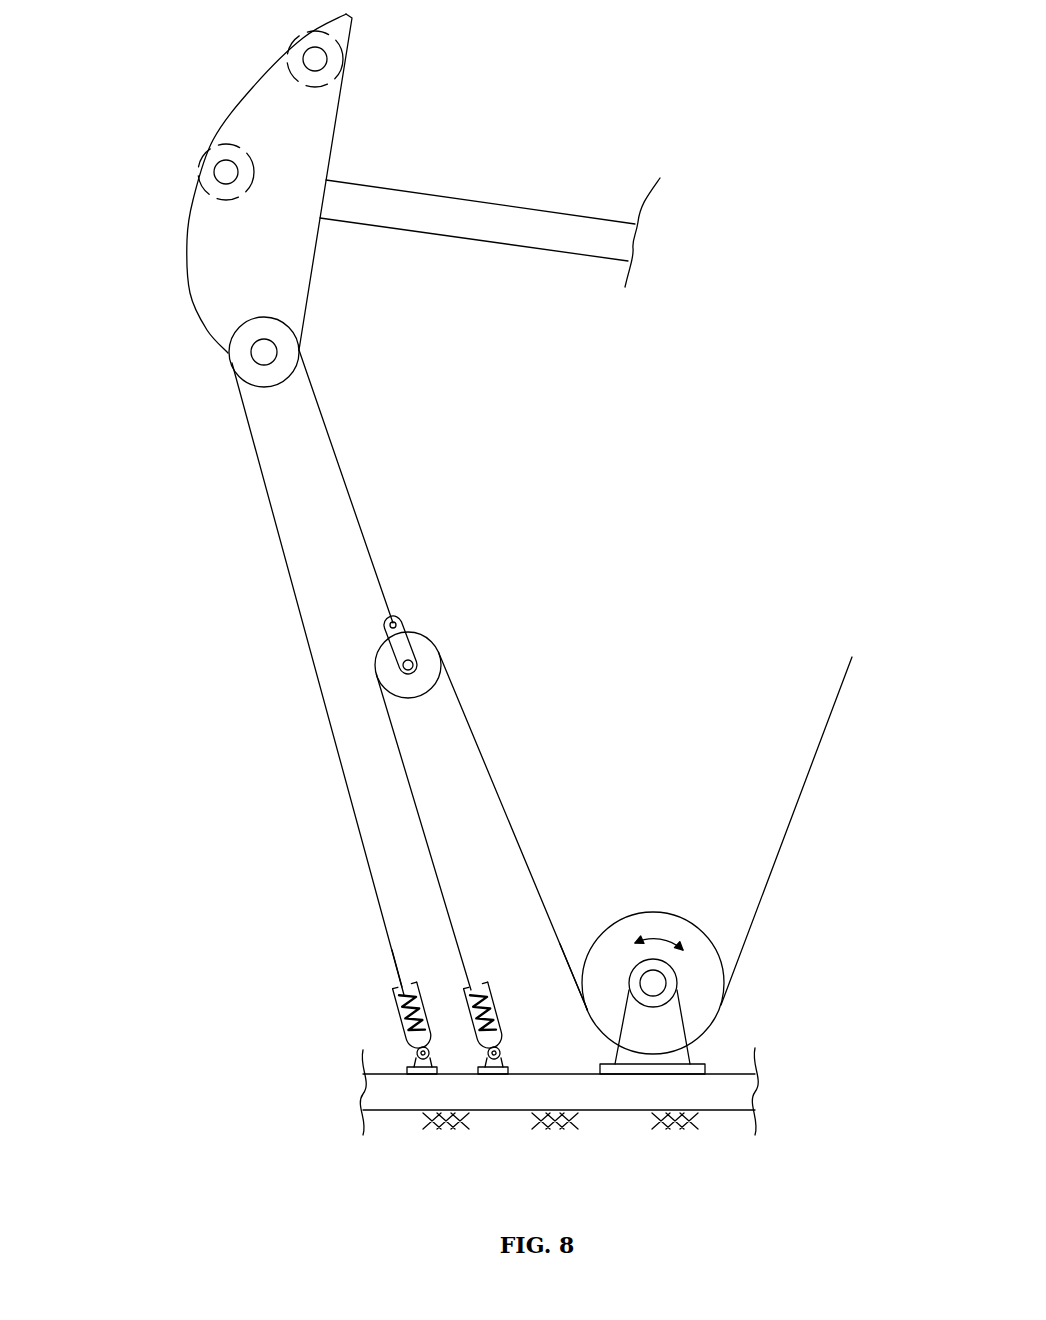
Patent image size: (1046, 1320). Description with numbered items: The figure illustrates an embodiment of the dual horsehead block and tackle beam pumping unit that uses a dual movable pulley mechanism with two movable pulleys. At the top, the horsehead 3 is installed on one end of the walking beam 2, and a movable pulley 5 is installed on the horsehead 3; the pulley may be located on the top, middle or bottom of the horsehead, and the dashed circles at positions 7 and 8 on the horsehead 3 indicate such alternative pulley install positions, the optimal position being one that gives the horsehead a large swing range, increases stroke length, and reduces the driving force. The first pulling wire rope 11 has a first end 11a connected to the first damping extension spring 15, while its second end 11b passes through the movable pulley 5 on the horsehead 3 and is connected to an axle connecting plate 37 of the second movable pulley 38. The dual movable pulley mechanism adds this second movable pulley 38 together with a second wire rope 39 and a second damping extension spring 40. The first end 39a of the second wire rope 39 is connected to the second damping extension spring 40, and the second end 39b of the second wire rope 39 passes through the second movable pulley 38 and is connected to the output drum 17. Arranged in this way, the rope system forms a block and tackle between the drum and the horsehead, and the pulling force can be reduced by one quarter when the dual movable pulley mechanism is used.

The walking beam 2 is at (418, 217).
The horsehead 3 is at (313, 110).
The movable pulley 5 is at (288, 347).
The pivot hole 7 is at (208, 183).
The pivot hole 8 is at (335, 60).
The first pulling wire rope 11 is at (337, 745).
The first end of the first pulling wire rope 11a is at (398, 968).
The second end of the first pulling wire rope 11b is at (393, 620).
The first damping extension spring 15 is at (397, 1020).
The output drum 17 is at (607, 967).
The axle connecting plate 37 is at (407, 637).
The second movable pulley 38 is at (432, 642).
The second wire rope 39 is at (517, 837).
The first end of the second wire rope 39a is at (468, 977).
The second end of the second wire rope 39b is at (580, 985).
The second damping extension spring 40 is at (495, 1017).